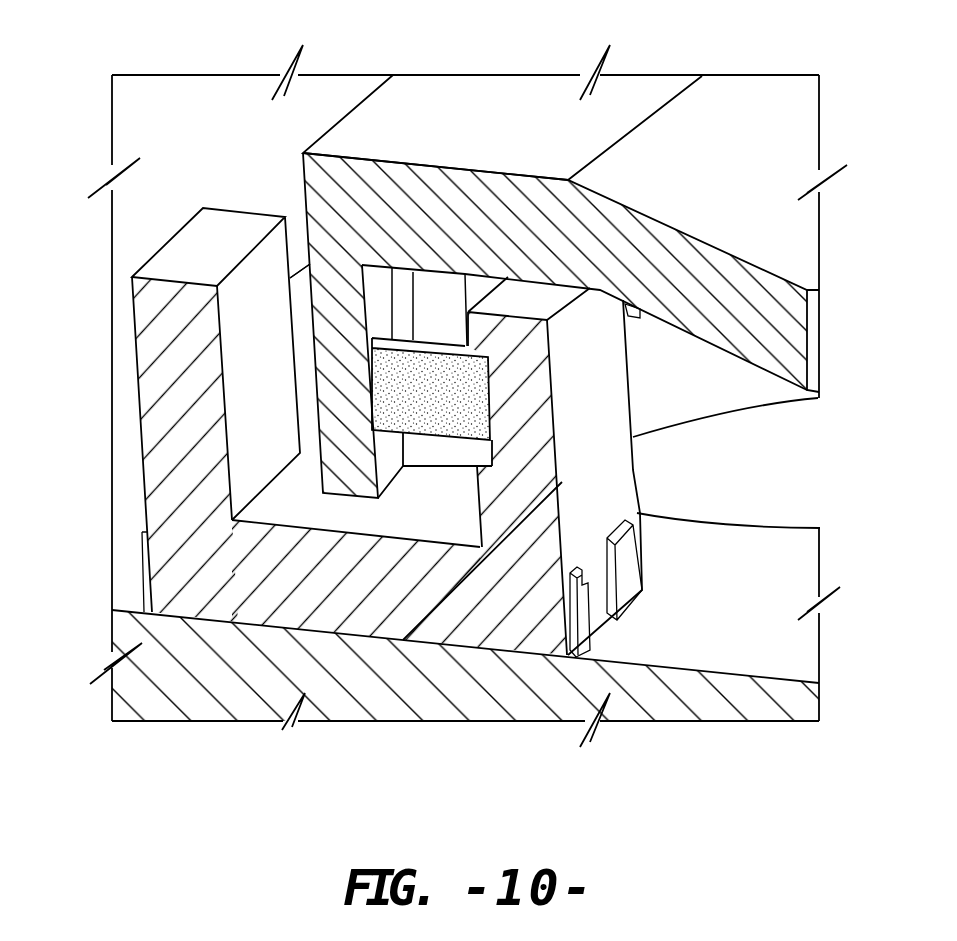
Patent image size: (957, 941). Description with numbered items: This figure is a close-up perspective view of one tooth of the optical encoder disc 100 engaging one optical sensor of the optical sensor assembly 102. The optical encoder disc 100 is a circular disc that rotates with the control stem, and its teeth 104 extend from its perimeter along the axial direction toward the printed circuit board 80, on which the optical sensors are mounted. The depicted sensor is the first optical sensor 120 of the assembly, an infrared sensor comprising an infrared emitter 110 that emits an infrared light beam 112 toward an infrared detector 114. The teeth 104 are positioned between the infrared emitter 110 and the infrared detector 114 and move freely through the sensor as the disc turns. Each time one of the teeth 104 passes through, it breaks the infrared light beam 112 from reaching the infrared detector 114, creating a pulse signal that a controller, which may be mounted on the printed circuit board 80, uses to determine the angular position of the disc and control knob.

The printed circuit board 80 is at (775, 658).
The optical encoder disc 100 is at (485, 112).
The optical sensor assembly 102 is at (182, 193).
The teeth 104 is at (343, 378).
The infrared emitter 110 is at (530, 405).
The infrared light beam 112 is at (453, 408).
The infrared detector 114 is at (183, 357).
The first optical sensor 120 is at (172, 415).